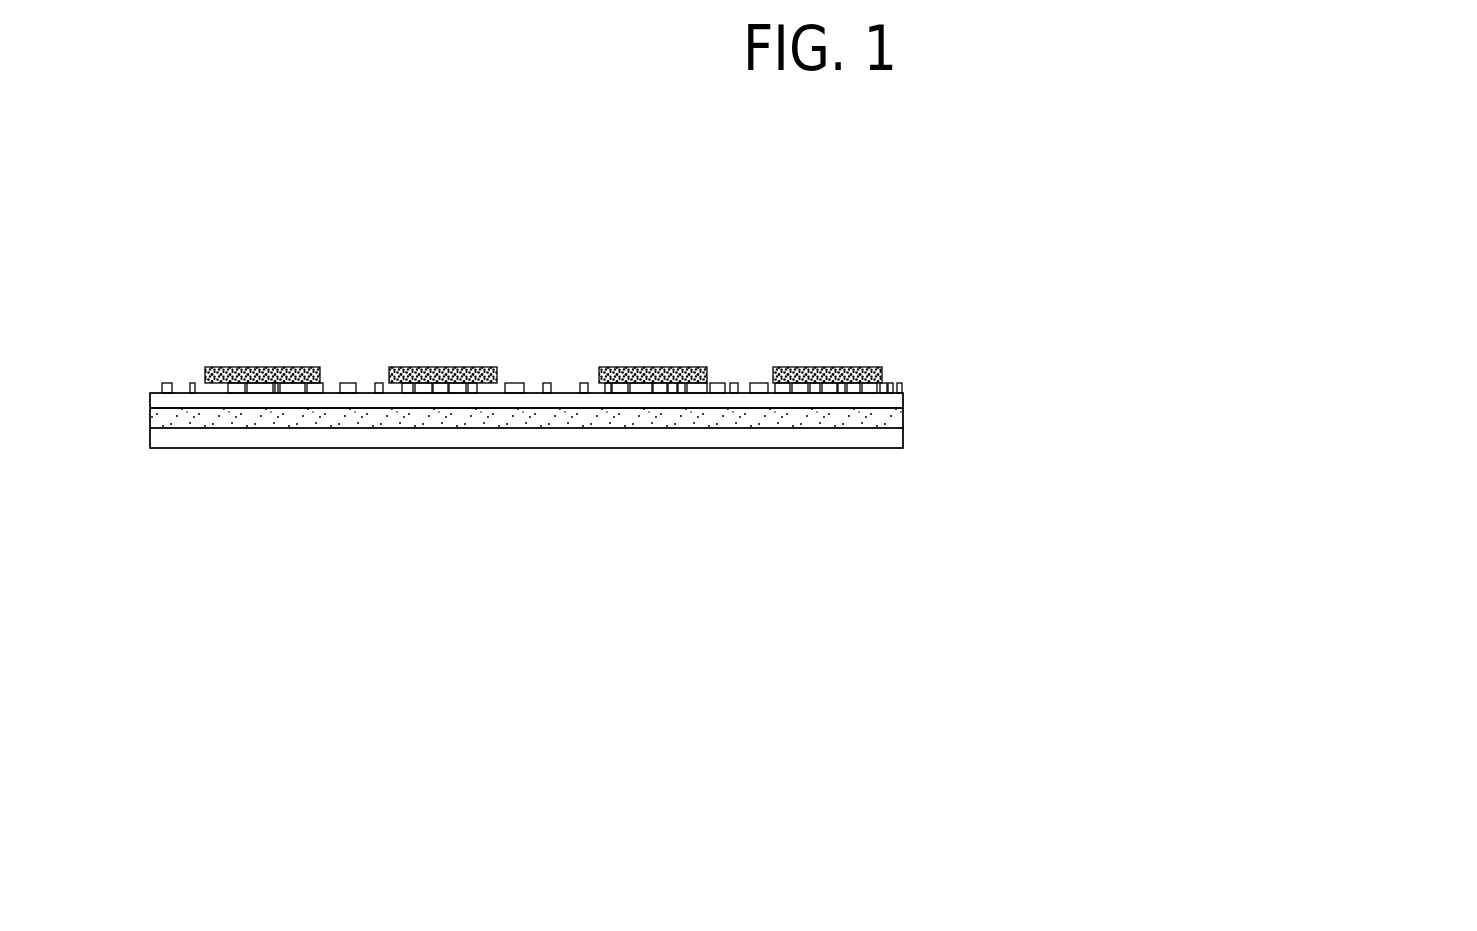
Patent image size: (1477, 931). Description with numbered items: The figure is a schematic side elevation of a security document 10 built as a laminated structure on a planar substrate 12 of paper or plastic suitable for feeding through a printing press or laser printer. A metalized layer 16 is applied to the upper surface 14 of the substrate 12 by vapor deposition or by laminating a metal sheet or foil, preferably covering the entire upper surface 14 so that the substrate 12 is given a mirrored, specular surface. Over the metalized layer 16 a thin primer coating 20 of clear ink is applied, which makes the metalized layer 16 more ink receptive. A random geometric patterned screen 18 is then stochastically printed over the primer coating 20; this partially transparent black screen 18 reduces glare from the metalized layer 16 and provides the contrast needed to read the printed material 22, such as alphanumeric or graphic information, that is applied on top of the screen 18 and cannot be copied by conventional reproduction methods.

The security document 10 is at (270, 323).
The substrate 12 is at (622, 437).
The upper surface 14 is at (316, 424).
The metalized layer 16 is at (520, 417).
The random geometric patterned screen 18 is at (353, 384).
The primer coating 20 is at (562, 395).
The printed material 22 is at (665, 368).